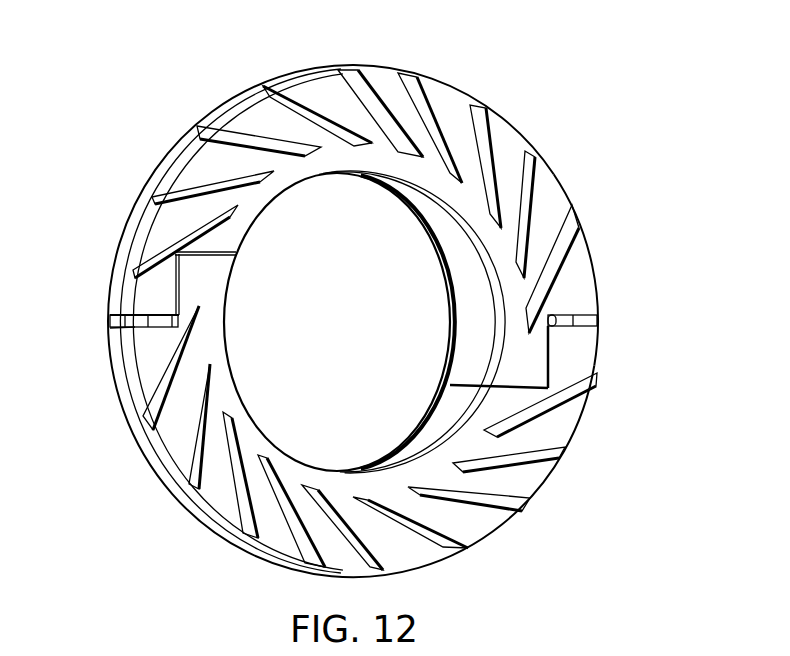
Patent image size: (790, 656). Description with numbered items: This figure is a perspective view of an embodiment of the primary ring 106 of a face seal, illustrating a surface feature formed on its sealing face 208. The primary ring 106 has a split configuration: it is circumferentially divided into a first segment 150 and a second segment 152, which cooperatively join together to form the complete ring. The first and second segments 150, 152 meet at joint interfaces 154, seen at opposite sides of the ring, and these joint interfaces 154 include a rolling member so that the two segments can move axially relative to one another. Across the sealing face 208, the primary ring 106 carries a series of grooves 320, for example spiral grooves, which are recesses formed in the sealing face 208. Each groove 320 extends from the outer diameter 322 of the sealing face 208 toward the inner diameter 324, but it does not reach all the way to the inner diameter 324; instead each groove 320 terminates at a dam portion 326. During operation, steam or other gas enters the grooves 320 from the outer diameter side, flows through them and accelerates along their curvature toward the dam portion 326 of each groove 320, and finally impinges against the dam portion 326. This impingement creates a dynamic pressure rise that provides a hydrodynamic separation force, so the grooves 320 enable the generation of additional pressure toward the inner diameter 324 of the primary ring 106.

The primary ring 106 is at (168, 476).
The first segment 150 is at (365, 291).
The second segment 152 is at (555, 489).
The joint interfaces 154 is at (622, 326).
The sealing face 208 is at (505, 150).
The grooves 320 is at (433, 85).
The outer diameter 322 is at (602, 227).
The inner diameter 324 is at (470, 356).
The dam portion 326 is at (362, 152).